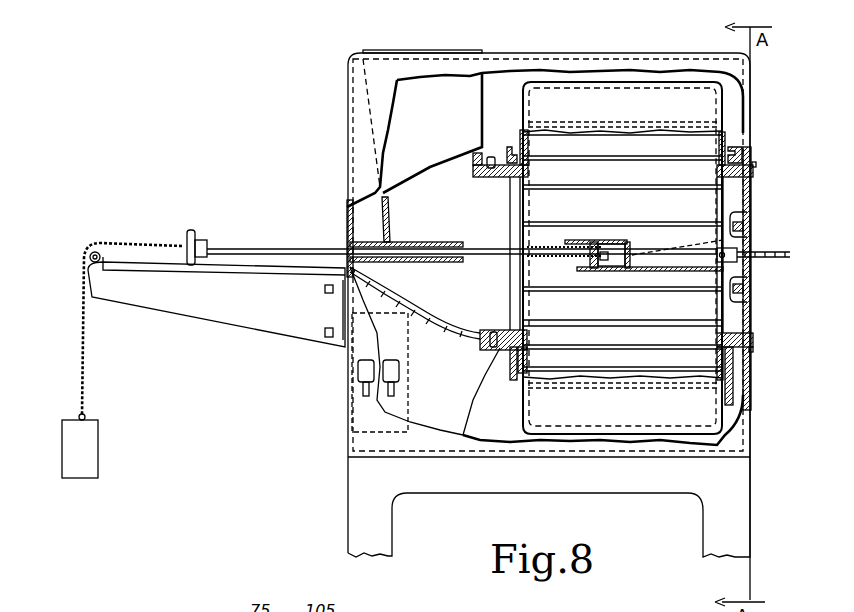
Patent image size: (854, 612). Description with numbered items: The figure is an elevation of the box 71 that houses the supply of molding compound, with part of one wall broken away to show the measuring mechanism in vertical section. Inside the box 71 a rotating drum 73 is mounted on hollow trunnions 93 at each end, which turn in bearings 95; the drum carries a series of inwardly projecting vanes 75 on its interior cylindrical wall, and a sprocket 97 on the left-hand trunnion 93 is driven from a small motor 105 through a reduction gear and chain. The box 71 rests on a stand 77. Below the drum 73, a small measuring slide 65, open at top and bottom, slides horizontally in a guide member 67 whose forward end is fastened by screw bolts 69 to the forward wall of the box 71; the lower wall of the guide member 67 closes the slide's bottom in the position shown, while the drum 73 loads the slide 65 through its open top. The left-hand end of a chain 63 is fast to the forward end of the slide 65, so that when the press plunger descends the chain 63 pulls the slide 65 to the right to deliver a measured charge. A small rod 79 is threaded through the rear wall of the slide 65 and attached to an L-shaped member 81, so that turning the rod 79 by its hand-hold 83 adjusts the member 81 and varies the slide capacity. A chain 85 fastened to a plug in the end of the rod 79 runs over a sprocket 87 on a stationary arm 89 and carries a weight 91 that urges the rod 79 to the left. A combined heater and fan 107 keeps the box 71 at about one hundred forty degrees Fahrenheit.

The chain 63 is at (771, 252).
The measuring slide 65 is at (588, 255).
The guide member 67 is at (592, 271).
The screw bolts 69 is at (748, 213).
The box 71 is at (347, 132).
The rotating drum 73 is at (718, 146).
The vanes 75 is at (617, 163).
The stand 77 is at (393, 513).
The rod 79 is at (302, 247).
The L-shaped member 81 is at (576, 240).
The hand-hold 83 is at (188, 229).
The chain 85 is at (86, 346).
The sprocket 87 is at (103, 256).
The stationary arm 89 is at (215, 313).
The weight 91 is at (92, 445).
The hollow trunnions 93 is at (512, 178).
The bearings 95 is at (511, 147).
The sprocket 97 is at (491, 157).
The motor 105 is at (408, 50).
The combined heater and fan 107 is at (352, 413).